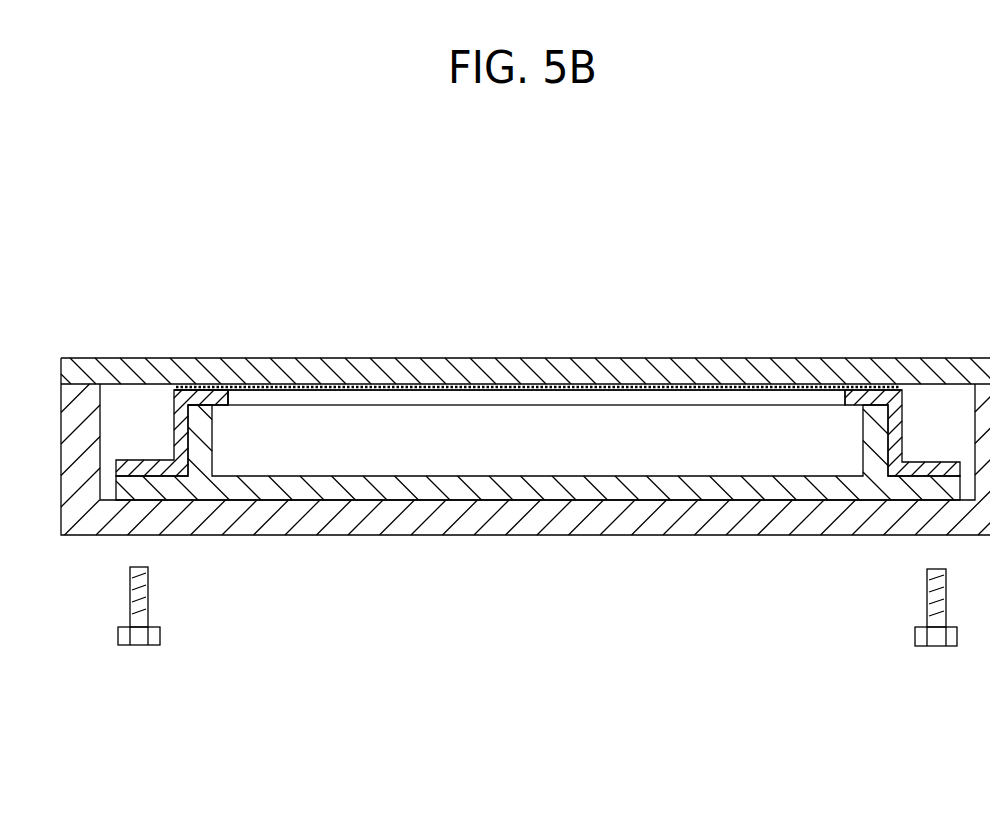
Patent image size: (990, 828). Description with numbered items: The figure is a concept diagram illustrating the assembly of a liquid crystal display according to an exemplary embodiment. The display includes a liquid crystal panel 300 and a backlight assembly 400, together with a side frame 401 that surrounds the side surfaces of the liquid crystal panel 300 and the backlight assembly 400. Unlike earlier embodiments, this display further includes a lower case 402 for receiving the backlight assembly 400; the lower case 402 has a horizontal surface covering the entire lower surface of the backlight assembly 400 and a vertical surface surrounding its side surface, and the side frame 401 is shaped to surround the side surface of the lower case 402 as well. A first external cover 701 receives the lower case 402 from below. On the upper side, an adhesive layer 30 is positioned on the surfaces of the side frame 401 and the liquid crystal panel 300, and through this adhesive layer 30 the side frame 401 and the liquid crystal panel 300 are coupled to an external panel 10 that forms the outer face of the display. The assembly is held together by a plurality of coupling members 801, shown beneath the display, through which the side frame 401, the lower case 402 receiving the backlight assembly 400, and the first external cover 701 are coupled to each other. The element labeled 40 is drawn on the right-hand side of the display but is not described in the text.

The external panel 10 is at (586, 372).
The adhesive layer 30 is at (813, 388).
The liquid crystal panel 300 is at (735, 398).
The right fixing bracket 40 is at (882, 397).
The backlight assembly 400 is at (412, 435).
The side frame 401 is at (183, 403).
The lower case 402 is at (202, 473).
The first external cover 701 is at (668, 520).
The coupling members 801 is at (142, 635).